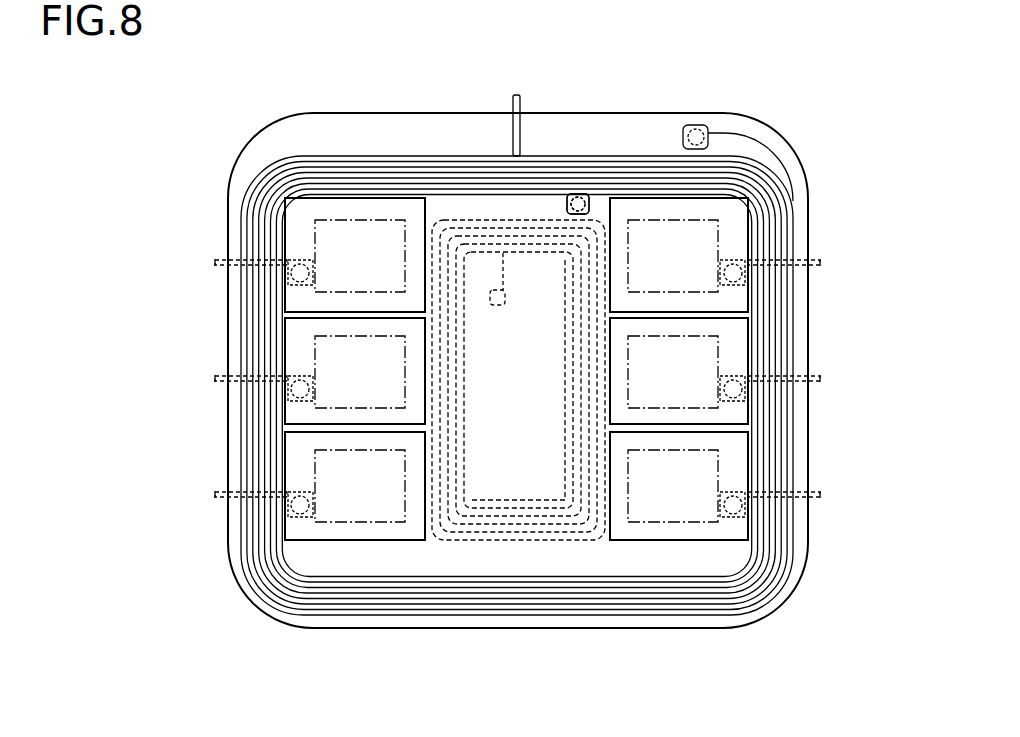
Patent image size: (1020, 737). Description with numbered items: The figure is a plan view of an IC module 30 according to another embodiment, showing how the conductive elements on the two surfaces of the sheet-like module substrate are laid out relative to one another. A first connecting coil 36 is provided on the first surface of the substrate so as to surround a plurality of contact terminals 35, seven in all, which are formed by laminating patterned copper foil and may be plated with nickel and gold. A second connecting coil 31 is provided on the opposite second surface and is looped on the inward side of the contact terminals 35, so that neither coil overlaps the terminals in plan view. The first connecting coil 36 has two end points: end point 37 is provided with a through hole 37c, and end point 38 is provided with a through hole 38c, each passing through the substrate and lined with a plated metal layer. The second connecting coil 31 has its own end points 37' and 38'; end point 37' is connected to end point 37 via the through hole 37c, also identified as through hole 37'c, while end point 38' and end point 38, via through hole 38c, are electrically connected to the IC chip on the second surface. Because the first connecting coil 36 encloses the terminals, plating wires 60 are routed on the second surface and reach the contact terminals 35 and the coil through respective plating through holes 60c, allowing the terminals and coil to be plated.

The IC module 30 is at (243, 150).
The second connecting coil 31 is at (522, 512).
The contact terminals 35 is at (322, 240).
The first connecting coil 36 is at (783, 172).
The end point 37 is at (559, 140).
The end point 37' is at (556, 243).
The through hole 37c is at (580, 195).
The through hole 37'c is at (578, 157).
The end point 38 is at (699, 104).
The end point 38' is at (528, 308).
The through hole 38c is at (700, 135).
The plating wires 60 is at (513, 108).
The plating through holes 60c is at (300, 285).